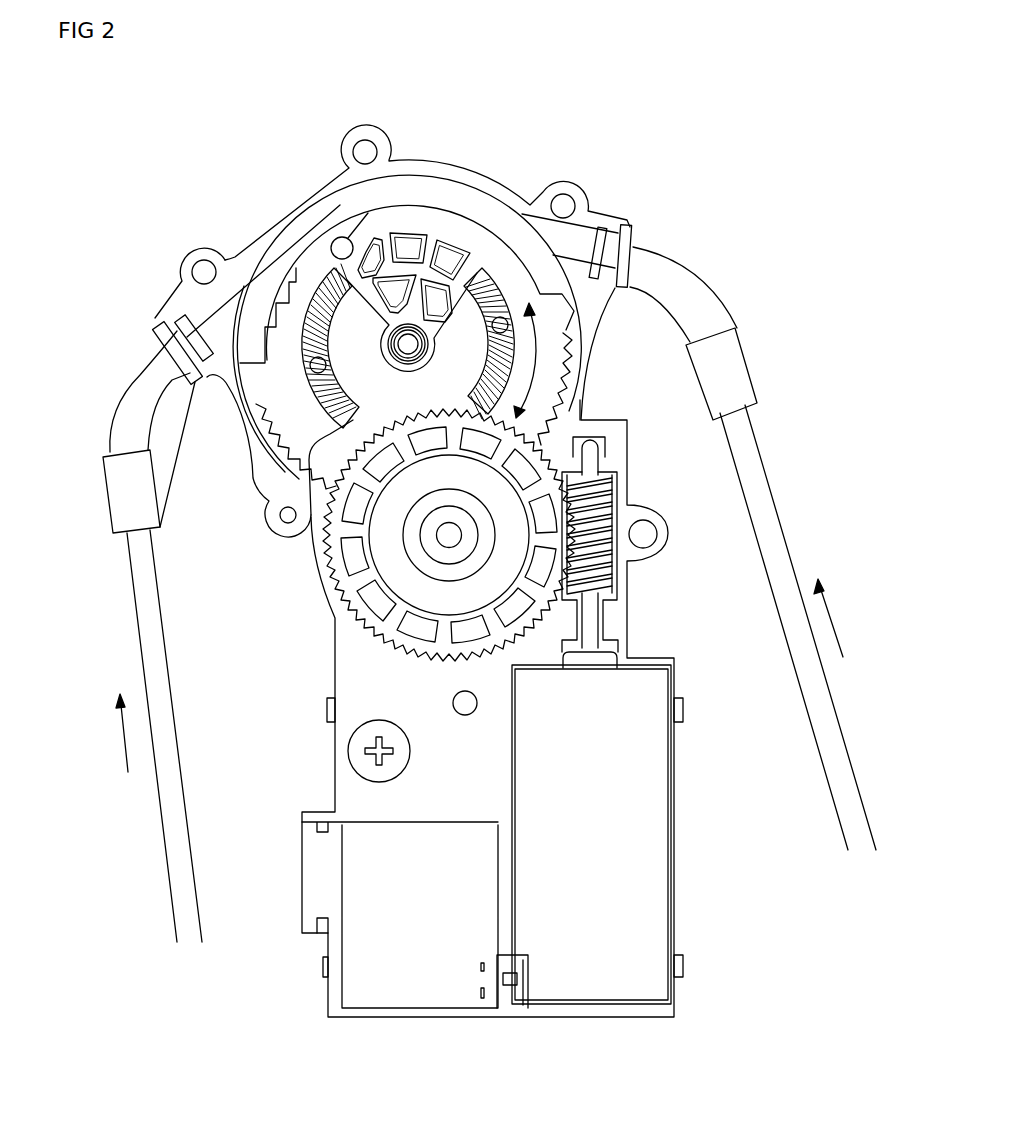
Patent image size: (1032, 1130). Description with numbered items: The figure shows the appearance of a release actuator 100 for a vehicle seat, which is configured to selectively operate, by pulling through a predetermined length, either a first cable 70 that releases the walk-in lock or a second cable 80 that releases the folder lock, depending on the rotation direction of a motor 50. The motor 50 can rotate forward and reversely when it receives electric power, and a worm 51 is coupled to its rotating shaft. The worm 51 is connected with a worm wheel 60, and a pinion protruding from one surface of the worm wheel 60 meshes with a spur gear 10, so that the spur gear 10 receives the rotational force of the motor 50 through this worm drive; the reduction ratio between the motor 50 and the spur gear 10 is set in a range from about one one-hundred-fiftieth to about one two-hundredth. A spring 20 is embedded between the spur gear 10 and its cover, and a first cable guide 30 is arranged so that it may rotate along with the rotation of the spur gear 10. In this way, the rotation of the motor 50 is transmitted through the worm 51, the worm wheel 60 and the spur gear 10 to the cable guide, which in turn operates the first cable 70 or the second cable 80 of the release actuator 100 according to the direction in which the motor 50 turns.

The release actuator 100 is at (737, 118).
The spur gear 10 is at (290, 414).
The spring 20 is at (343, 423).
The first cable guide 30 is at (457, 228).
The motor 50 is at (588, 913).
The worm 51 is at (593, 575).
The worm wheel 60 is at (367, 600).
The first cable 70 is at (178, 818).
The second cable 80 is at (770, 547).